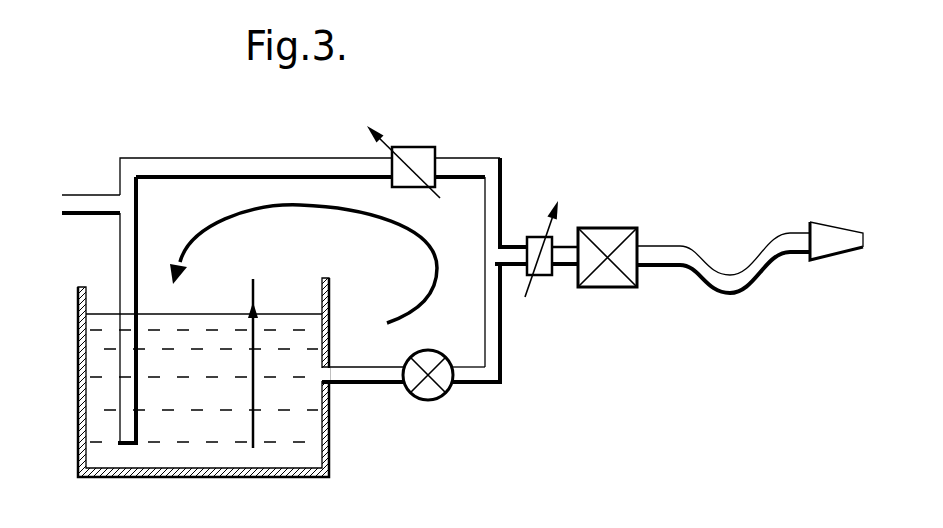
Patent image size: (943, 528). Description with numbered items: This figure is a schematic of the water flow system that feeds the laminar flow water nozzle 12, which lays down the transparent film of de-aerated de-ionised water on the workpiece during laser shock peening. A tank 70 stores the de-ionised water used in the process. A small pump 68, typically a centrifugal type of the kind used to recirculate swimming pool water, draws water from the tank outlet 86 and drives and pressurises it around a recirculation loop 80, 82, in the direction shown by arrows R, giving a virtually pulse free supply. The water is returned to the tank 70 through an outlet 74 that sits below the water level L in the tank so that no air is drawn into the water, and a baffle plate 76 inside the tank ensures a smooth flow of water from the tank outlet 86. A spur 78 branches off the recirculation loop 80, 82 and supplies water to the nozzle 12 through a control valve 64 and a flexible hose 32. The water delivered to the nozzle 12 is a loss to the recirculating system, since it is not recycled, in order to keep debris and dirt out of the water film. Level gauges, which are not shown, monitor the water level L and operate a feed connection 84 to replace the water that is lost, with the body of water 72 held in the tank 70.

The laminar flow water nozzle 12 is at (828, 232).
The flexible hose 32 is at (752, 258).
The control valve 64 is at (605, 235).
The pump 68 is at (425, 398).
The tank 70 is at (148, 478).
The liquid reservoir 72 is at (97, 425).
The outlet 74 is at (126, 370).
The baffle plate 76 is at (279, 349).
The spur 78 is at (508, 270).
The recirculation loop 80 is at (483, 388).
The recirculation loop 82 is at (474, 158).
The feed connection 84 is at (92, 200).
The tank outlet 86 is at (345, 390).
The water level L is at (173, 315).
The arrows R is at (392, 222).